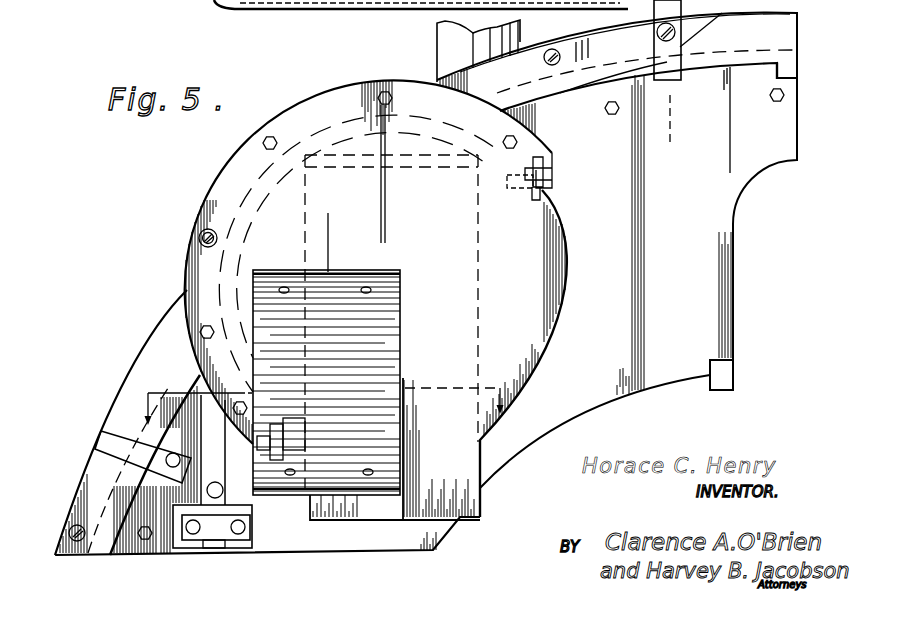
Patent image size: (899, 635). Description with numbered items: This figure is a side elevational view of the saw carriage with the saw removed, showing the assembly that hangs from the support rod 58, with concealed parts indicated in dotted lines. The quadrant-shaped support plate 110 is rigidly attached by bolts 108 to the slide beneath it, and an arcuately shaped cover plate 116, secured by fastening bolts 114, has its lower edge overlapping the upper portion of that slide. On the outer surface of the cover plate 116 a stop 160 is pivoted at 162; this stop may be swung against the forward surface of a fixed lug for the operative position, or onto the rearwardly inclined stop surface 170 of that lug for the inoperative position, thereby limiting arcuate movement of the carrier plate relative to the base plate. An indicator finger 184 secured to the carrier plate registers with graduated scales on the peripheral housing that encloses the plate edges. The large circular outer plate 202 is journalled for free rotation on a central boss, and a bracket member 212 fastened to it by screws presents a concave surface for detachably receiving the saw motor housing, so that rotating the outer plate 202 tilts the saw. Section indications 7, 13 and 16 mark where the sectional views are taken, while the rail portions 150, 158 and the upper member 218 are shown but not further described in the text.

The upper housing bar 218 is at (284, 3).
The support rod 58 is at (450, 50).
The fastening bolts 114 is at (550, 49).
The cover plate 116 is at (582, 42).
The pivot 162 is at (654, 34).
The inclined stop surface 170 is at (703, 33).
The curved rail 150 is at (745, 25).
The stop 160 is at (667, 60).
The rail end step 158 is at (790, 73).
The bolts 108 is at (606, 110).
The section line 13 is at (690, 143).
The support plate 110 is at (718, 236).
The outer plate 202 is at (547, 273).
The bracket member 212 is at (385, 378).
The section line 16 is at (325, 395).
The indicator finger 184 is at (118, 433).
The section line 7 / bottom bracket 7 is at (212, 177).